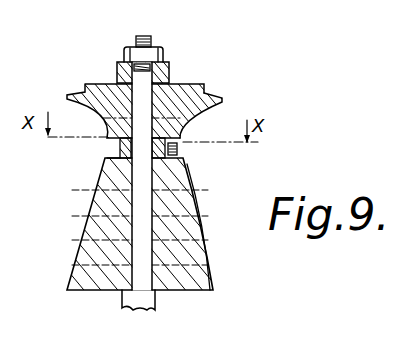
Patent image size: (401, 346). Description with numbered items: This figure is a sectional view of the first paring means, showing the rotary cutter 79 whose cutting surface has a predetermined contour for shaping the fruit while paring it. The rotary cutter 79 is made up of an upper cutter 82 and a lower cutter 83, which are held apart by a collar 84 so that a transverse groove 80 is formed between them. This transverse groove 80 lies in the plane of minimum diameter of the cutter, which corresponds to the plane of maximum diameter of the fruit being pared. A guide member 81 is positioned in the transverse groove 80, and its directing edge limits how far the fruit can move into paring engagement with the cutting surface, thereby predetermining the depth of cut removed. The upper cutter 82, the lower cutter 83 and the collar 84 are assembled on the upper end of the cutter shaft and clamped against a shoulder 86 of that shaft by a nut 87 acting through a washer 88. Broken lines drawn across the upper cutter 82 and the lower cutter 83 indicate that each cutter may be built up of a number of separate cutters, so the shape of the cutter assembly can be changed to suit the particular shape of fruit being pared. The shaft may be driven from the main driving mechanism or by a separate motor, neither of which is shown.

The rotary cutter 79 is at (63, 86).
The transverse groove 80 is at (112, 152).
The guide member 81 is at (178, 146).
The upper cutter 82 is at (198, 106).
The lower cutter 83 is at (84, 222).
The collar 84 is at (120, 147).
The shoulder 86 is at (122, 298).
The nut 87 is at (161, 56).
The washer 88 is at (170, 76).